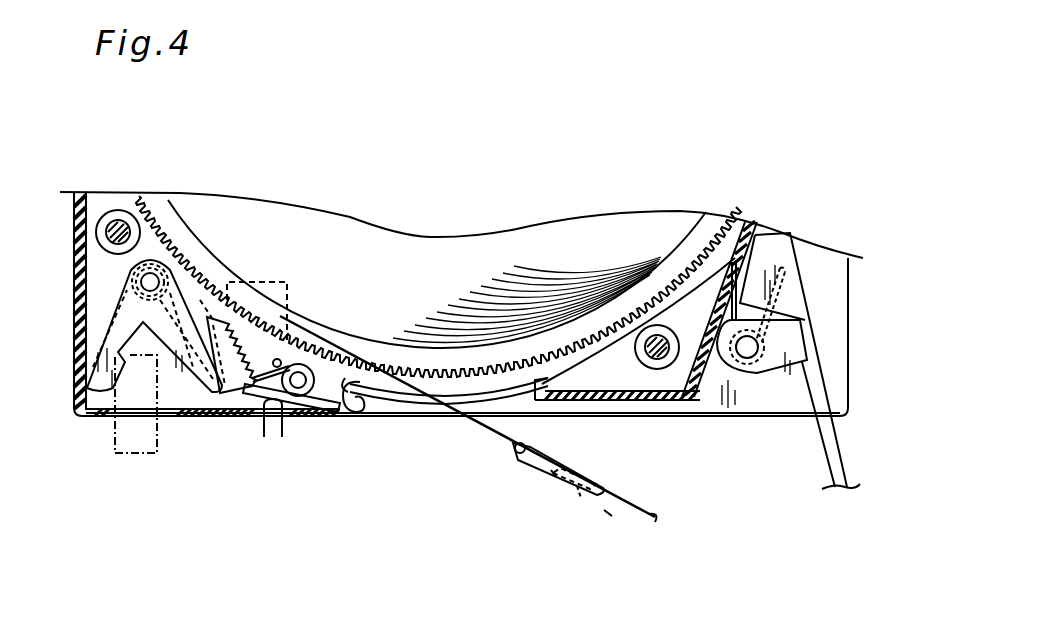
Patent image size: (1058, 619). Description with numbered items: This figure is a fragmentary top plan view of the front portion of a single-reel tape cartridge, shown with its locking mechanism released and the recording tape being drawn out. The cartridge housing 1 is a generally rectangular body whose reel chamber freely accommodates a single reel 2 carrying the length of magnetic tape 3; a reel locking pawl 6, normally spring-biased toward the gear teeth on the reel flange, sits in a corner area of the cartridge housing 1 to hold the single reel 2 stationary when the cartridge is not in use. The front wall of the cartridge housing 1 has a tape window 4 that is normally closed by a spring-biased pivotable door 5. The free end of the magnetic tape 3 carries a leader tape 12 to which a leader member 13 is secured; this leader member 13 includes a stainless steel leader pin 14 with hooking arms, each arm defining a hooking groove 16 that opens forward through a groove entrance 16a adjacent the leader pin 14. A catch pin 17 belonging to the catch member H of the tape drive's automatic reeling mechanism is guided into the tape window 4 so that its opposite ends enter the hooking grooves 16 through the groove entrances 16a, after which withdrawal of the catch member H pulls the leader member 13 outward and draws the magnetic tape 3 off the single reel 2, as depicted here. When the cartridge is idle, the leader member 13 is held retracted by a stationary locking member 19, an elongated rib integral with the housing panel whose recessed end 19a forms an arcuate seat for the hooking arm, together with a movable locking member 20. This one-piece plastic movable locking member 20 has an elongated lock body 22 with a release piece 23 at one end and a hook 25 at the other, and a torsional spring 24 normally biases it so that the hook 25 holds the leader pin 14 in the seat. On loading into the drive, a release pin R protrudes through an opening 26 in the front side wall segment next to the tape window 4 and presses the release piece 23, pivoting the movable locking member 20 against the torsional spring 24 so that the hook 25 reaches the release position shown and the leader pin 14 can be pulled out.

The cartridge housing 1 is at (76, 214).
The single reel 2 is at (133, 197).
The magnetic tape 3 is at (240, 197).
The tape window 4 is at (421, 416).
The pivotable door 5 is at (830, 466).
The reel locking pawl 6 is at (105, 300).
The leader tape 12 is at (493, 439).
The leader member 13 is at (578, 474).
The leader pin 14 is at (528, 447).
The hooking groove 16 is at (562, 491).
The groove entrance 16a is at (553, 478).
The catch pin 17 is at (581, 500).
The stationary locking member 19 is at (475, 390).
The end of stationary locking member 19a is at (352, 390).
The movable locking member 20 is at (333, 376).
The lock body 22 is at (300, 418).
The release piece 23 is at (230, 394).
The torsional spring 24 is at (288, 340).
The hook 25 is at (350, 420).
The opening 26 is at (262, 410).
The release pin R is at (272, 442).
The catch member H is at (609, 518).